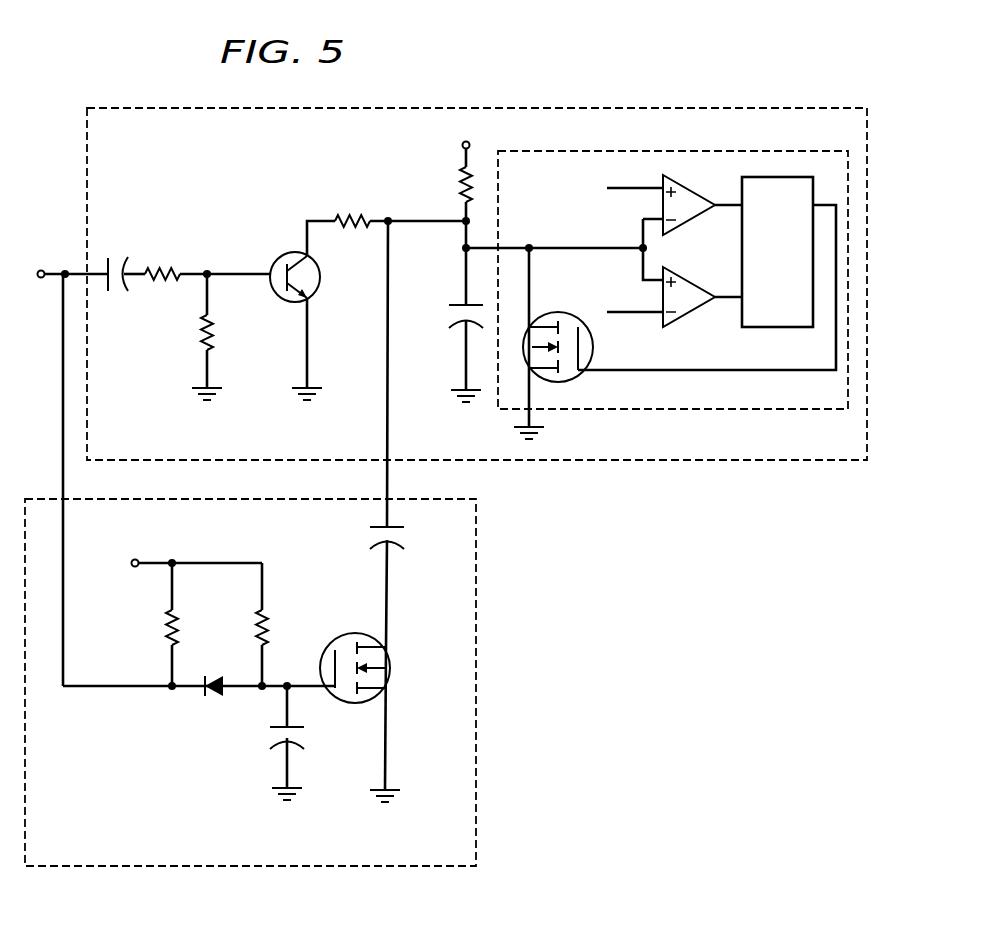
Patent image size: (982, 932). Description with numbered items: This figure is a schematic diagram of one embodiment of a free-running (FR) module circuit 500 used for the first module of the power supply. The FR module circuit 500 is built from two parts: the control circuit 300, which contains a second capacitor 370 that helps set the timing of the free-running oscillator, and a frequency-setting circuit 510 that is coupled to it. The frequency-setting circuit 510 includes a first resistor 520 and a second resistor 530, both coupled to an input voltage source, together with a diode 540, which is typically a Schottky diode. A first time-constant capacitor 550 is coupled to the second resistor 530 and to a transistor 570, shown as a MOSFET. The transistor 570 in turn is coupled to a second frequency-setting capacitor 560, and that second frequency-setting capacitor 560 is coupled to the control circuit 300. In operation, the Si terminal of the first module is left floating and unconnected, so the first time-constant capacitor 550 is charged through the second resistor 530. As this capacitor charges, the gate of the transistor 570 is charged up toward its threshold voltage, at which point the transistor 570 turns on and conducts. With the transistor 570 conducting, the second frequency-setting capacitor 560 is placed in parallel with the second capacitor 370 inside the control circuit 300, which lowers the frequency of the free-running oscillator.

The control circuit 300 is at (681, 462).
The second capacitor 370 is at (447, 313).
The FR module circuit 500 is at (663, 614).
The frequency-setting circuit 510 is at (477, 590).
The first resistor 520 is at (158, 627).
The second resistor 530 is at (268, 622).
The diode 540 is at (217, 697).
The first time-constant capacitor 550 is at (273, 735).
The second frequency-setting capacitor 560 is at (363, 530).
The transistor 570 is at (392, 668).